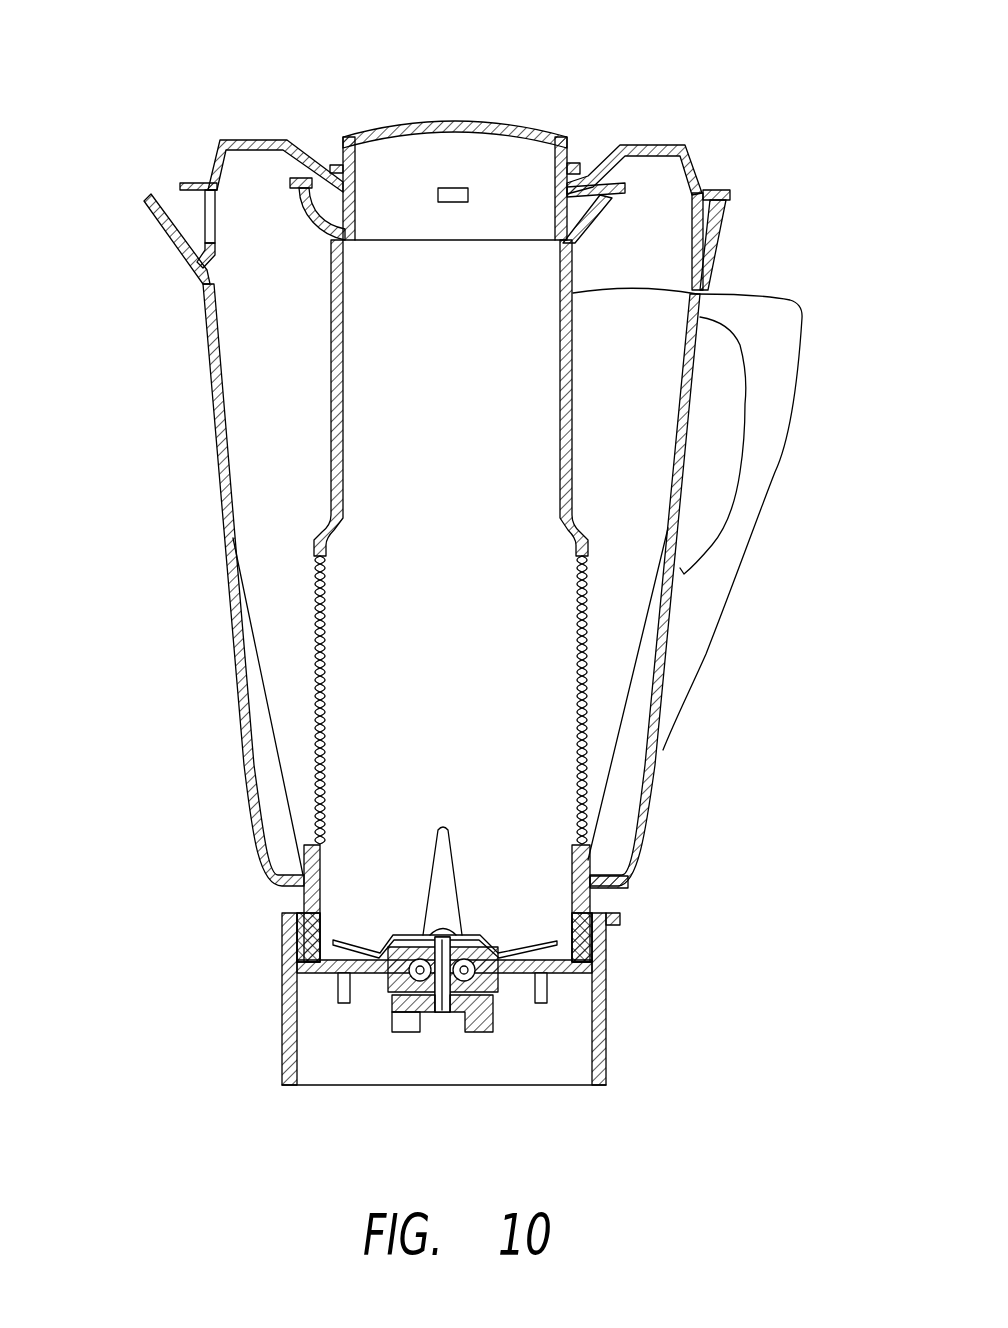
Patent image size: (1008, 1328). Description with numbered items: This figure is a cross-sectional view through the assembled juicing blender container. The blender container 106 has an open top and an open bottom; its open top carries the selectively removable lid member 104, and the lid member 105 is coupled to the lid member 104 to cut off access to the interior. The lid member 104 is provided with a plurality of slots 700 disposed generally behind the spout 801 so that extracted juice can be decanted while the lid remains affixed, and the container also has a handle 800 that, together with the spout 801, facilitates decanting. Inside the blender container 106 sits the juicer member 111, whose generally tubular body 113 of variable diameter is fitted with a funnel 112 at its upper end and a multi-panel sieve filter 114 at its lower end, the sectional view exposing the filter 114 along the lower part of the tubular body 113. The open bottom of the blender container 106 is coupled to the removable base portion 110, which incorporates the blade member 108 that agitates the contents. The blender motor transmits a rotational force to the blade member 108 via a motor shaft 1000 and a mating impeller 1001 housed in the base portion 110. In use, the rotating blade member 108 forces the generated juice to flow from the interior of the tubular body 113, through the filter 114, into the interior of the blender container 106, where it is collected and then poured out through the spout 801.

The lid member 104 is at (230, 139).
The lid member 105 is at (437, 124).
The blender container 106 is at (227, 598).
The blade member 108 is at (447, 883).
The base portion 110 is at (607, 1030).
The juicer member 111 is at (335, 345).
The funnel 112 is at (620, 236).
The tubular body 113 is at (697, 294).
The multi-panel sieve filter 114 is at (313, 772).
The slots 700 is at (210, 218).
The handle 800 is at (777, 350).
The spout 801 is at (158, 228).
The motor shaft 1000 is at (445, 1010).
The impeller 1001 is at (478, 1010).